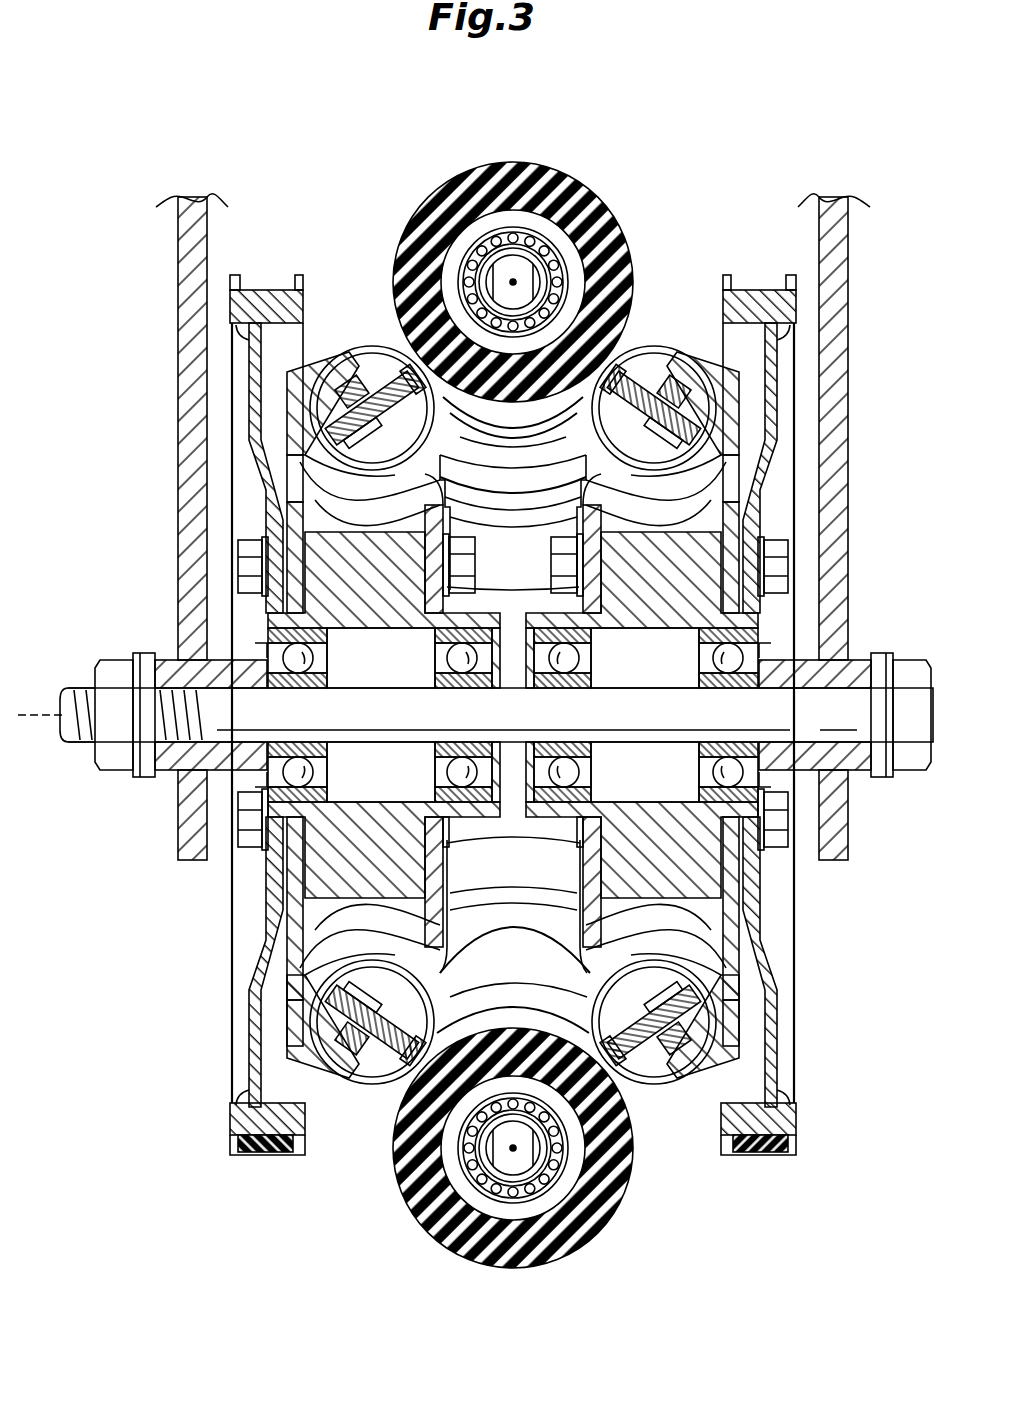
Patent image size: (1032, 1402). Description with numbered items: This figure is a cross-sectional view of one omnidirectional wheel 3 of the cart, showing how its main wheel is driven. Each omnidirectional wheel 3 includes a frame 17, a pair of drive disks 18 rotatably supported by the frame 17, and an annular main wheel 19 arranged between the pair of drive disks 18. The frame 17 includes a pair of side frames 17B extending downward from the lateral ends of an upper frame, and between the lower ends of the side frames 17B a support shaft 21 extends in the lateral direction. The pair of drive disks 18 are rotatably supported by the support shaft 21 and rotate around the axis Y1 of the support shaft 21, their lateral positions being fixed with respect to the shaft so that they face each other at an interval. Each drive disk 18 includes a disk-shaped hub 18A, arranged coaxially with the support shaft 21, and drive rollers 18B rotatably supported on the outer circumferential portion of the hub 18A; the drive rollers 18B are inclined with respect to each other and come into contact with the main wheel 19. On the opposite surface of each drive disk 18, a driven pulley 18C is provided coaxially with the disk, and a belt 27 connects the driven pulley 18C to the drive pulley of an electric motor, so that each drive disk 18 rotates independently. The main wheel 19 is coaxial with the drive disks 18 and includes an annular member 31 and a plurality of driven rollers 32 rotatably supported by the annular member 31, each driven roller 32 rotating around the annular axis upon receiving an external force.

The omnidirectional wheel 3 is at (481, 667).
The frame 17 is at (506, 527).
The side frame 17B is at (178, 297).
The drive disk 18 is at (320, 354).
The hub 18A is at (705, 548).
The drive roller 18B is at (645, 360).
The driven pulley 18C is at (232, 1122).
The main wheel 19 is at (491, 667).
The support shaft 21 is at (630, 700).
The belt 27 is at (265, 1150).
The annular member 31 is at (520, 265).
The driven roller 32 is at (428, 237).
The axis of the support shaft Y1 is at (30, 726).